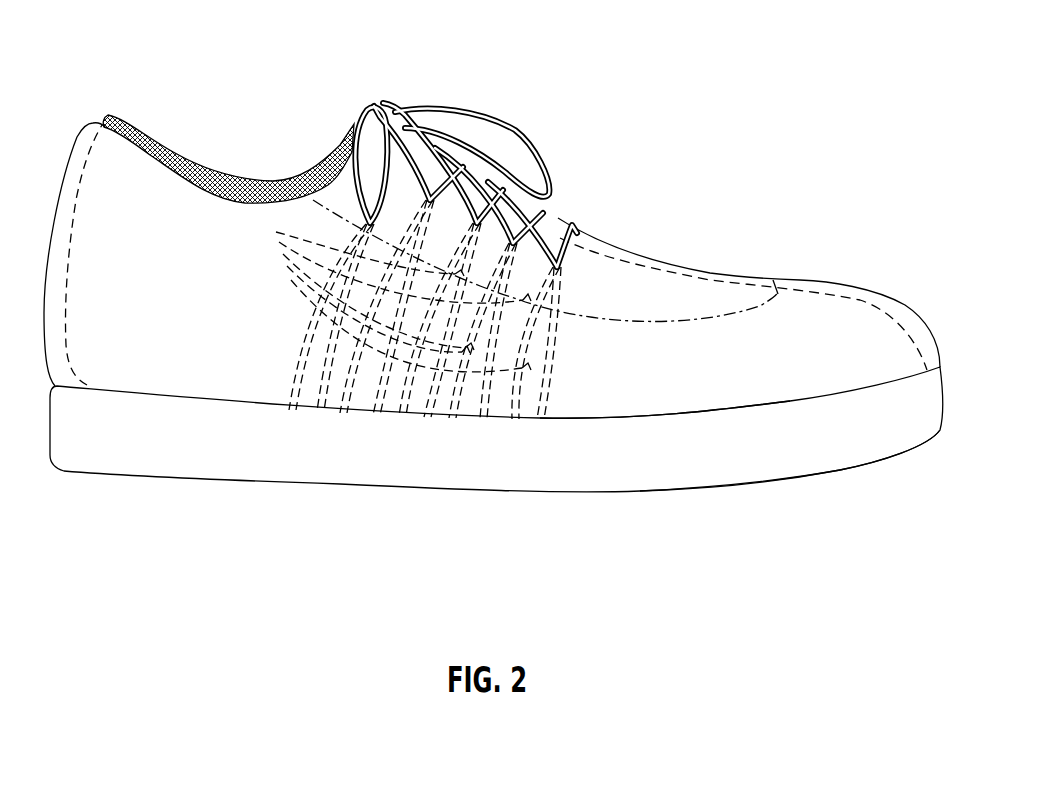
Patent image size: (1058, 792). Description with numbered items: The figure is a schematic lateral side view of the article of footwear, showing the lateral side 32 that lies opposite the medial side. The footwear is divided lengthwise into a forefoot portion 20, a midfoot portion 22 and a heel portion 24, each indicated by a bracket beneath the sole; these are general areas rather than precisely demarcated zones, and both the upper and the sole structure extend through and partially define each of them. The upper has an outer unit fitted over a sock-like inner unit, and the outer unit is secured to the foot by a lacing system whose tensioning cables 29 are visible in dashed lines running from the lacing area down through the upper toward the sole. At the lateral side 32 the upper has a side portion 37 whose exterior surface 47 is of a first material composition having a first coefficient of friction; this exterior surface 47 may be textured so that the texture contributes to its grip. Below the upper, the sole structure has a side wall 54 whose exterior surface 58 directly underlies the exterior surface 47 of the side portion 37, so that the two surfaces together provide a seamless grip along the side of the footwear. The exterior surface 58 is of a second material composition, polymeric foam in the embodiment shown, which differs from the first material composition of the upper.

The forefoot portion 20 is at (950, 546).
The midfoot portion 22 is at (659, 546).
The heel portion 24 is at (50, 546).
The tensioning cables 29 is at (276, 234).
The lateral side 32 is at (577, 363).
The side portion 37 is at (723, 387).
The exterior surface 47 is at (686, 374).
The side wall 54 is at (733, 458).
The exterior surface 58 is at (776, 444).